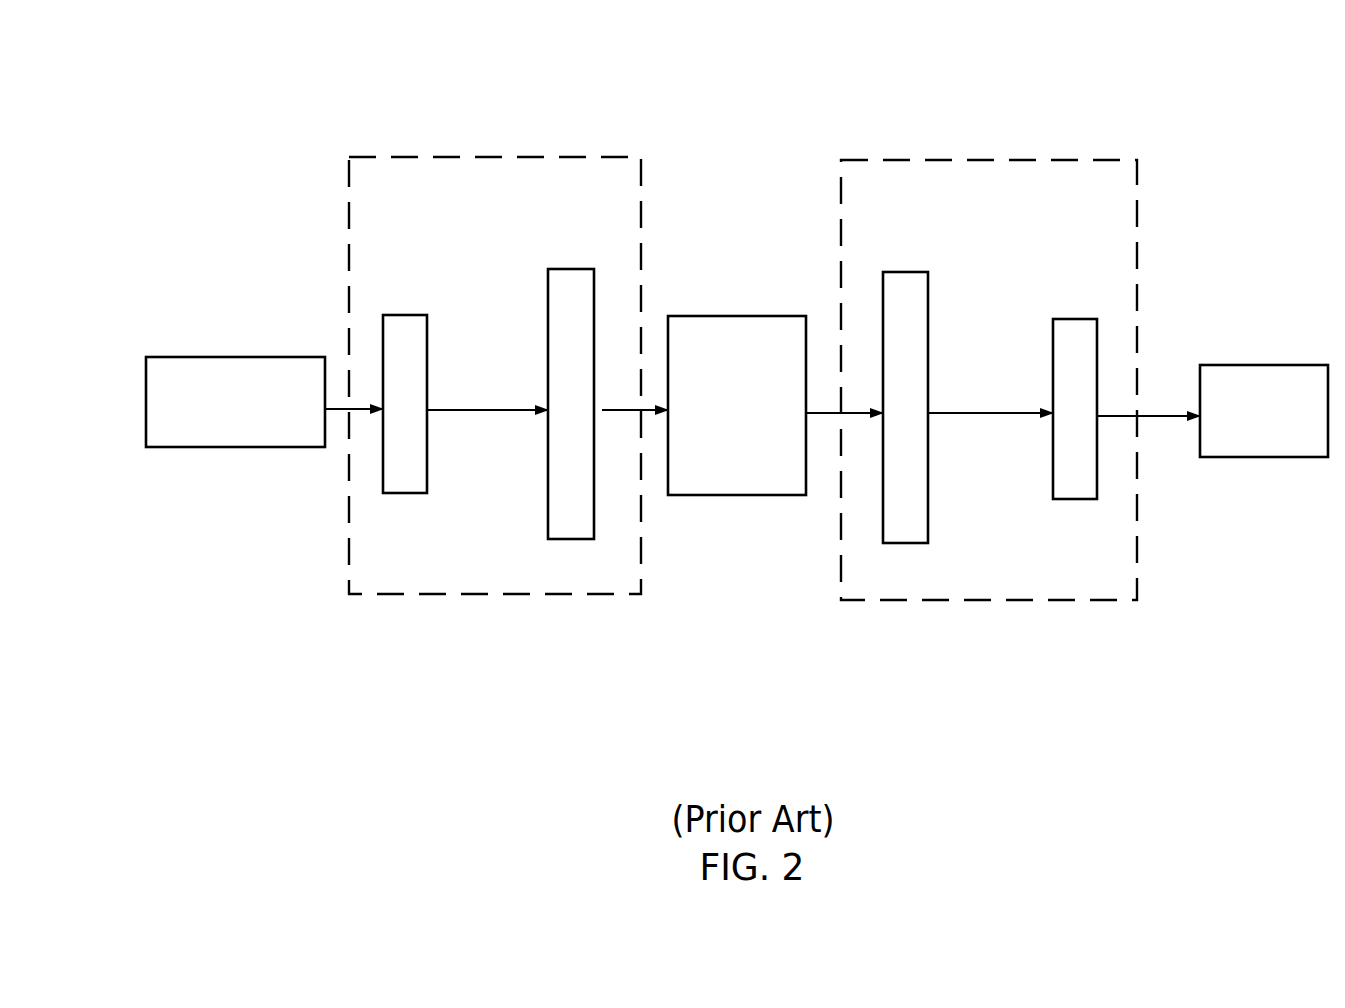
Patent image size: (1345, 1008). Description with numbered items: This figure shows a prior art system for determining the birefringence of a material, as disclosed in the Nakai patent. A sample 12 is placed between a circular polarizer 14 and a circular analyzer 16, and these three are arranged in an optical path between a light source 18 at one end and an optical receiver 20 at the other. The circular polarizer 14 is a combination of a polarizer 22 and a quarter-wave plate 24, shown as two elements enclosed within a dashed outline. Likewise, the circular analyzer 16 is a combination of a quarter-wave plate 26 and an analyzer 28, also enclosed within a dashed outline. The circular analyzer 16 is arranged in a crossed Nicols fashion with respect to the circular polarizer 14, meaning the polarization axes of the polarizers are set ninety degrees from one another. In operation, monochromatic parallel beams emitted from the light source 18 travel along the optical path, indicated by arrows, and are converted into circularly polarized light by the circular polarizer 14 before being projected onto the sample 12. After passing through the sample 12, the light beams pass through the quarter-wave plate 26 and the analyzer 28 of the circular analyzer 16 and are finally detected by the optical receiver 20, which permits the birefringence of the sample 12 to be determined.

The sample 12 is at (737, 405).
The circular polarizer 14 is at (503, 155).
The circular analyzer 16 is at (1002, 157).
The light source 18 is at (235, 402).
The optical receiver 20 is at (1264, 411).
The polarizer 22 is at (412, 454).
The quarter-wave plate 24 is at (567, 505).
The quarter-wave plate 26 is at (911, 340).
The analyzer 28 is at (1077, 352).